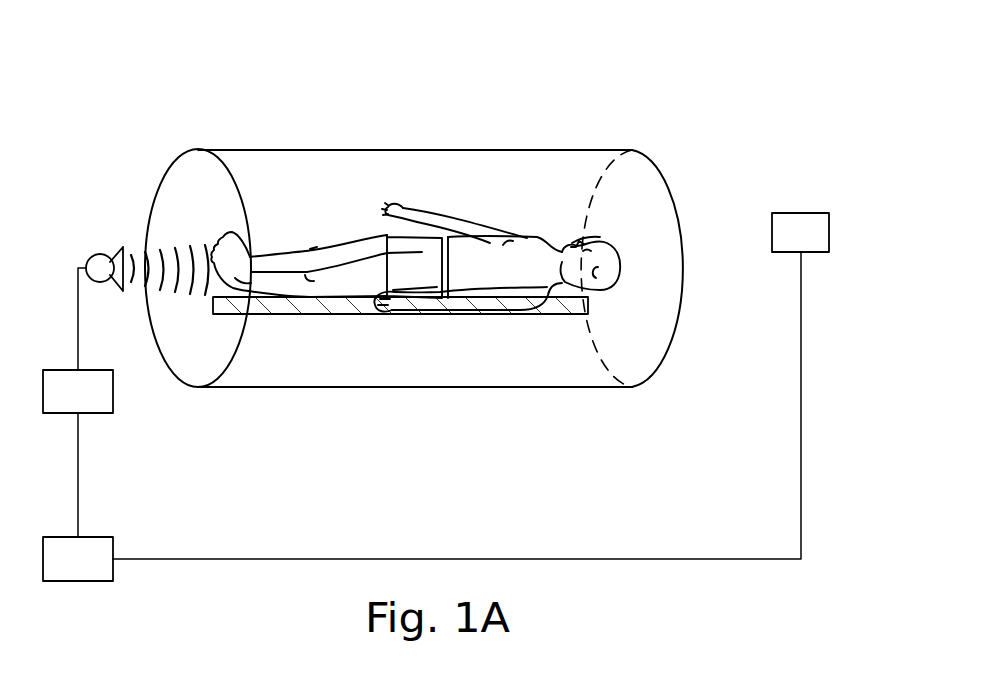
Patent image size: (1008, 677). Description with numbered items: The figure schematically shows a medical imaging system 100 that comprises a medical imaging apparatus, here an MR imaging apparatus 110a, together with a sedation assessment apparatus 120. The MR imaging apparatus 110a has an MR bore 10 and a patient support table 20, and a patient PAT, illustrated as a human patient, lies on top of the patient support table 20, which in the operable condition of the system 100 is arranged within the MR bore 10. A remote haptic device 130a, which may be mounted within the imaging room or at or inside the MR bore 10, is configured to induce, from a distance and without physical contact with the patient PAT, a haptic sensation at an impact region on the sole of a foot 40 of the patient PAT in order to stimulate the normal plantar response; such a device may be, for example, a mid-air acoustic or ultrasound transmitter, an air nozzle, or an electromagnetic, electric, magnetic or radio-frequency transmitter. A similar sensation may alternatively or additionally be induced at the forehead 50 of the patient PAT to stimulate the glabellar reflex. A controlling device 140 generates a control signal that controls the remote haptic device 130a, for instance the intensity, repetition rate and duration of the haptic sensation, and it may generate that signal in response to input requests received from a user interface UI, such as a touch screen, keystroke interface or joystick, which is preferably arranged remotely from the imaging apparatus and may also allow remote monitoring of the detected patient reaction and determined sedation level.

The medical imaging system 100 is at (708, 56).
The MR bore 10 is at (222, 148).
The MR imaging apparatus 110a is at (587, 126).
The remote haptic device 130a is at (97, 253).
The foot 40 is at (233, 236).
The patient support table 20 is at (553, 313).
The patient PAT is at (350, 290).
The forehead 50 is at (600, 237).
The sedation assessment apparatus 120 is at (830, 235).
The controlling device 140 is at (57, 414).
The user interface UI is at (80, 582).